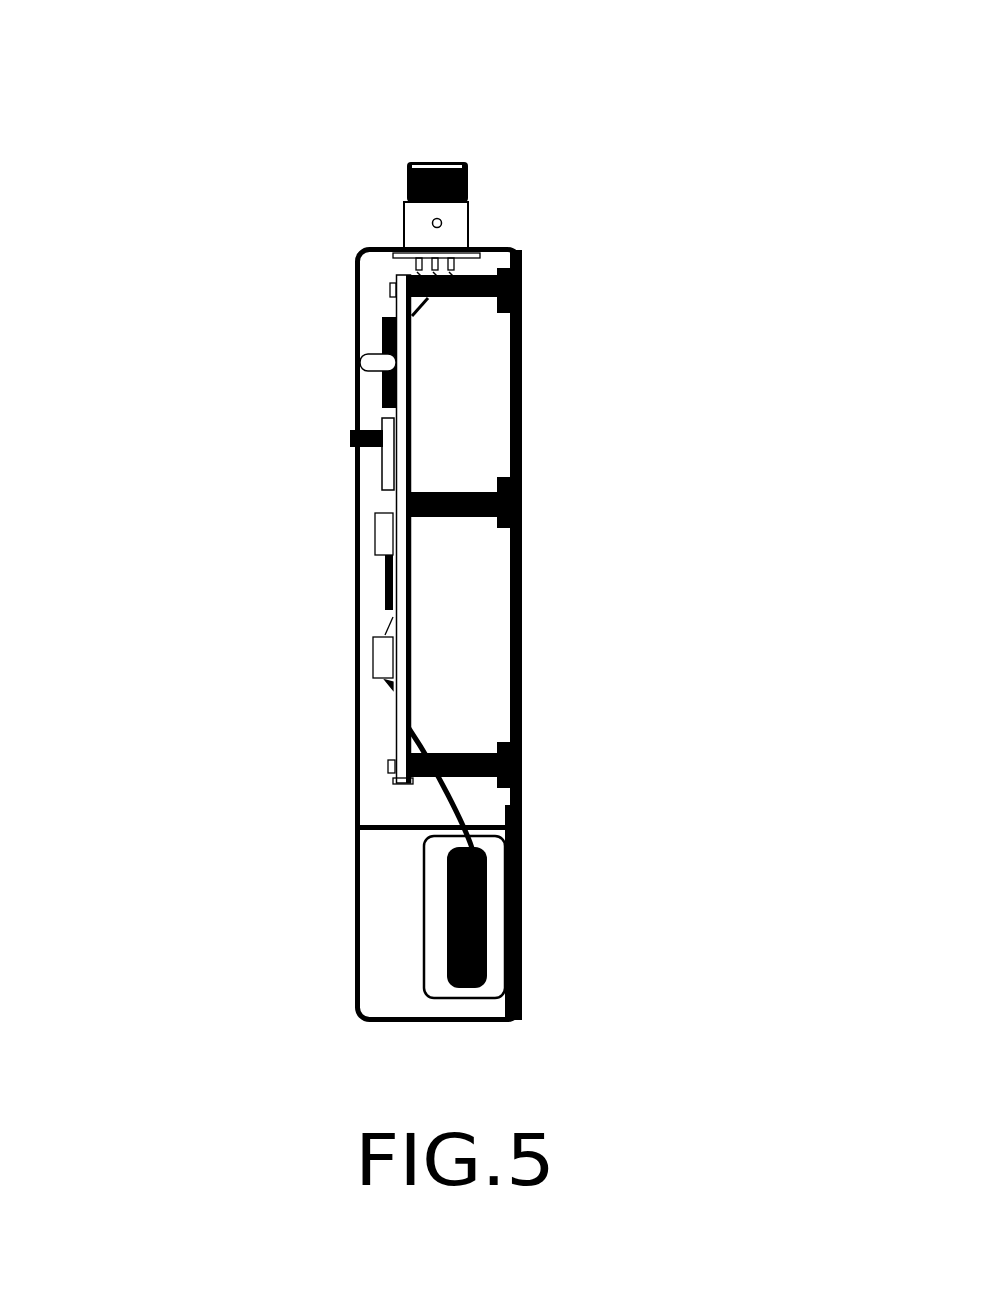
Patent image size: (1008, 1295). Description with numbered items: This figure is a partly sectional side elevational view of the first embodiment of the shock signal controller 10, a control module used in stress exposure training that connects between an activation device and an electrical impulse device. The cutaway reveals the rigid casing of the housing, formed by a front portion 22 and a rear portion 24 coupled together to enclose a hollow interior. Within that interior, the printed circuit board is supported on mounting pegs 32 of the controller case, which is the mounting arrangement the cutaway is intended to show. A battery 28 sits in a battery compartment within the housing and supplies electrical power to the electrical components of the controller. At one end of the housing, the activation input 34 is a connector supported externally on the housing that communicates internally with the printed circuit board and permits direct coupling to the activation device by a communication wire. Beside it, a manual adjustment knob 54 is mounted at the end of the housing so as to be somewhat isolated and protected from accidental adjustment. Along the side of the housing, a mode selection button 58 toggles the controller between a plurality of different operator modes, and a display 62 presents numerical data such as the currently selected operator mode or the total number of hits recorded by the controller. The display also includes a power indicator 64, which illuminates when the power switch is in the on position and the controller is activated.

The shock signal controller 10 is at (666, 78).
The front portion 22 is at (355, 757).
The rear portion 24 is at (522, 694).
The battery 28 is at (437, 948).
The mounting pegs 32 is at (522, 367).
The activation input 34 is at (455, 220).
The manual adjustment knob 54 is at (407, 172).
The mode selection button 58 is at (352, 432).
The display 62 is at (382, 320).
The power indicator 64 is at (378, 368).